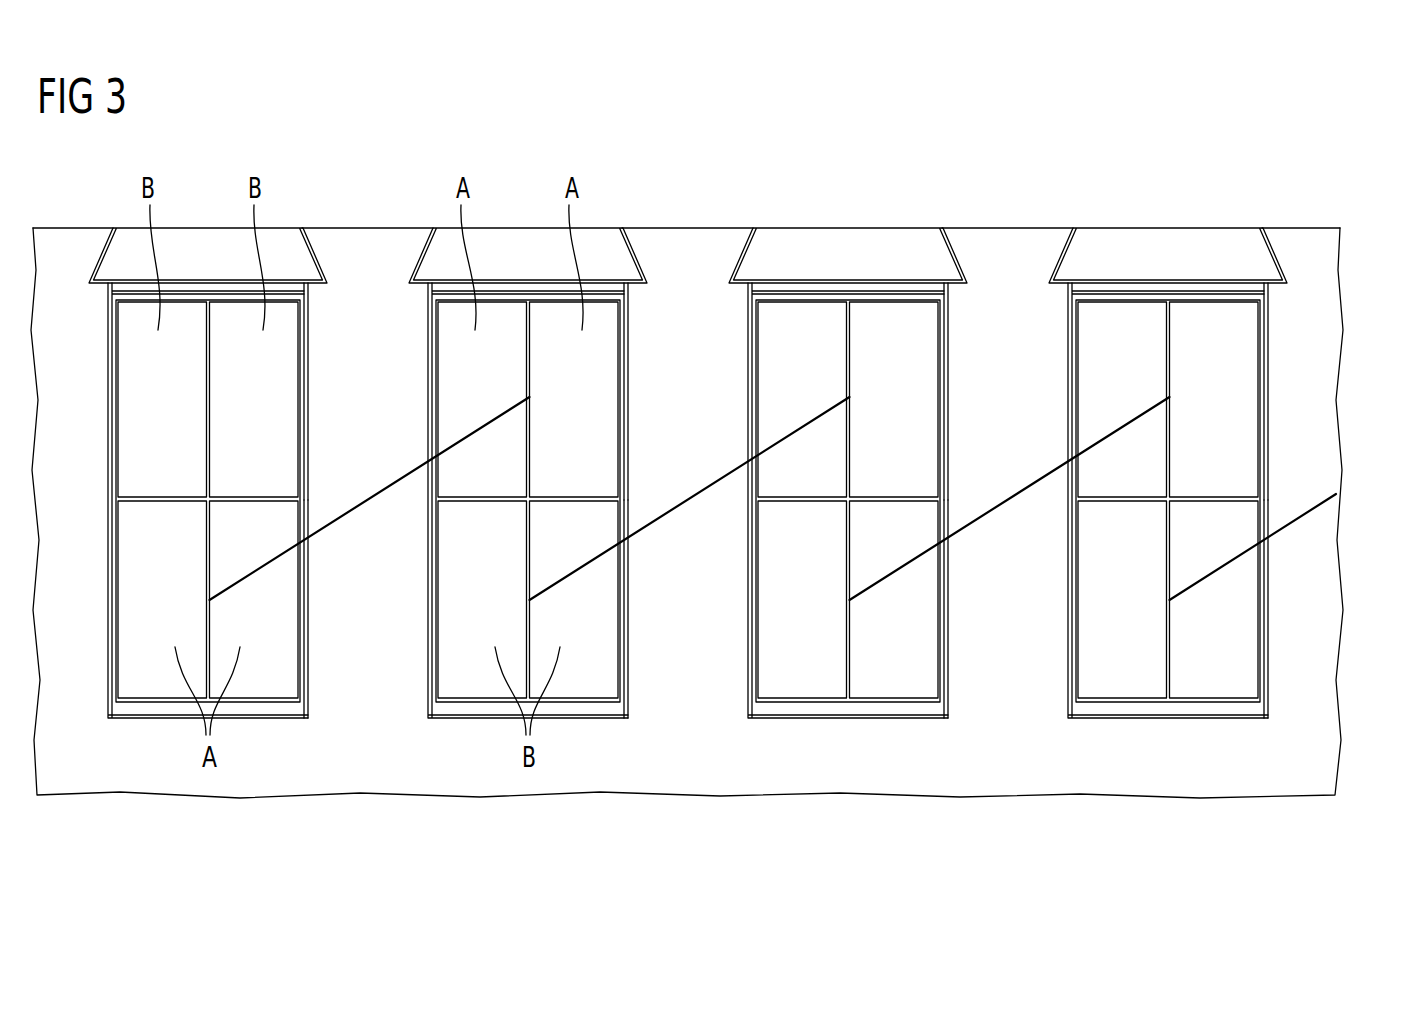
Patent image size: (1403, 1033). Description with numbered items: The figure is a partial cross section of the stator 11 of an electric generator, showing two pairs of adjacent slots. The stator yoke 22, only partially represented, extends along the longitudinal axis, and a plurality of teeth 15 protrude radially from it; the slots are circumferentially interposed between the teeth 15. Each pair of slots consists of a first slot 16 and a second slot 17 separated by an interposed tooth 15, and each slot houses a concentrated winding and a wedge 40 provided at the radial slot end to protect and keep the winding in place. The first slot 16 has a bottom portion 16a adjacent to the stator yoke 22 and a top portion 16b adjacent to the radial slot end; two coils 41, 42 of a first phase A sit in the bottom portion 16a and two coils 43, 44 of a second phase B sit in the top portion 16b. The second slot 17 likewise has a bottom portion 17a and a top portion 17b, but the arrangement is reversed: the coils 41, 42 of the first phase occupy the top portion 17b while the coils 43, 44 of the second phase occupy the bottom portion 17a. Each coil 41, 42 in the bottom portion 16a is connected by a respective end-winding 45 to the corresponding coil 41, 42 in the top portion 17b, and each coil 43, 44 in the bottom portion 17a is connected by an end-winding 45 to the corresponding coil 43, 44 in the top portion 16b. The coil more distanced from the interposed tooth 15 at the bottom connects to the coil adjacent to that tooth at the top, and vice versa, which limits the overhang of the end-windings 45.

The stator 11 is at (1278, 186).
The tooth 15 is at (62, 251).
The first slot 16 is at (565, 500).
The bottom portion of the first slot 16a is at (305, 638).
The top portion of the first slot 16b is at (305, 443).
The second slot 17 is at (879, 500).
The bottom portion of the second slot 17a is at (625, 638).
The top portion of the second slot 17b is at (625, 443).
The stator yoke 22 is at (1325, 689).
The wedge 40 is at (206, 256).
The coil 41 is at (155, 625).
The coil 42 is at (265, 590).
The coil 43 is at (155, 369).
The coil 44 is at (265, 366).
The end-winding 45 is at (368, 497).